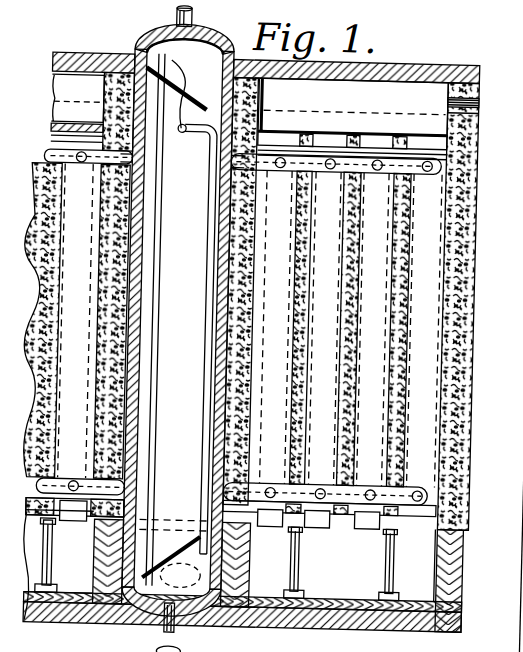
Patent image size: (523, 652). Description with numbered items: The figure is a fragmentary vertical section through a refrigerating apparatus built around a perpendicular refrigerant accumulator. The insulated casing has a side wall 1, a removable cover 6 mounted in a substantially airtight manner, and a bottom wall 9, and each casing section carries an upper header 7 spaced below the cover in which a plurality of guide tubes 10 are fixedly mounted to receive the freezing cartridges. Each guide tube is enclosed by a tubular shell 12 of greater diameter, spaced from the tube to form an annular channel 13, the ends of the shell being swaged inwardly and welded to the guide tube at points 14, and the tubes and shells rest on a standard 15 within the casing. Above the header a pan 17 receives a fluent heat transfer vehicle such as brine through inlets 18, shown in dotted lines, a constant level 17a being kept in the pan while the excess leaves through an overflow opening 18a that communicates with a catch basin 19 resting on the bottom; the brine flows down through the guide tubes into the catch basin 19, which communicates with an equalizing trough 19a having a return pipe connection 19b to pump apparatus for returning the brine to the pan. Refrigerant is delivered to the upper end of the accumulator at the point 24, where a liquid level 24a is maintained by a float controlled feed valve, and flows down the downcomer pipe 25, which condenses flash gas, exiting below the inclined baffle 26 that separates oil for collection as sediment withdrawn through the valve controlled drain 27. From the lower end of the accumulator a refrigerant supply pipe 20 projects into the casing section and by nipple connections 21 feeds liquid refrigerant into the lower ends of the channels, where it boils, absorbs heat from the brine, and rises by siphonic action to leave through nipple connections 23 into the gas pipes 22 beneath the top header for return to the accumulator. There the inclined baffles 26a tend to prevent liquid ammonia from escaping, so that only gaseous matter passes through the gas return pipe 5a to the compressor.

The side wall 1 is at (473, 388).
The gas return pipe 5a is at (185, 16).
The removable cover 6 is at (406, 64).
The upper header 7 is at (520, 215).
The bottom wall 9 is at (434, 626).
The guide tube 10 is at (522, 445).
The tubular shell 12 is at (522, 540).
The annular channel 13 is at (522, 491).
The shell end connection 14 is at (516, 254).
The standard 15 is at (305, 542).
The pan 17 is at (256, 115).
The constant level 17a is at (351, 107).
The inlet 18 is at (215, 79).
The overflow opening 18a is at (464, 102).
The catch basin 19 is at (440, 580).
The equalizing trough 19a is at (158, 651).
The return pipe connection 19b is at (203, 597).
The refrigerant supply pipe 20 is at (224, 491).
The nipple connection 21 is at (374, 494).
The gas pipe 22 is at (238, 153).
The nipple connection 23 is at (374, 157).
The refrigerant delivery point 24 is at (200, 158).
The liquid level 24a is at (158, 149).
The downcomer pipe 25 is at (210, 253).
The inclined baffle 26 is at (195, 546).
The inclined baffle 26a is at (172, 82).
The valve controlled drain 27 is at (179, 630).